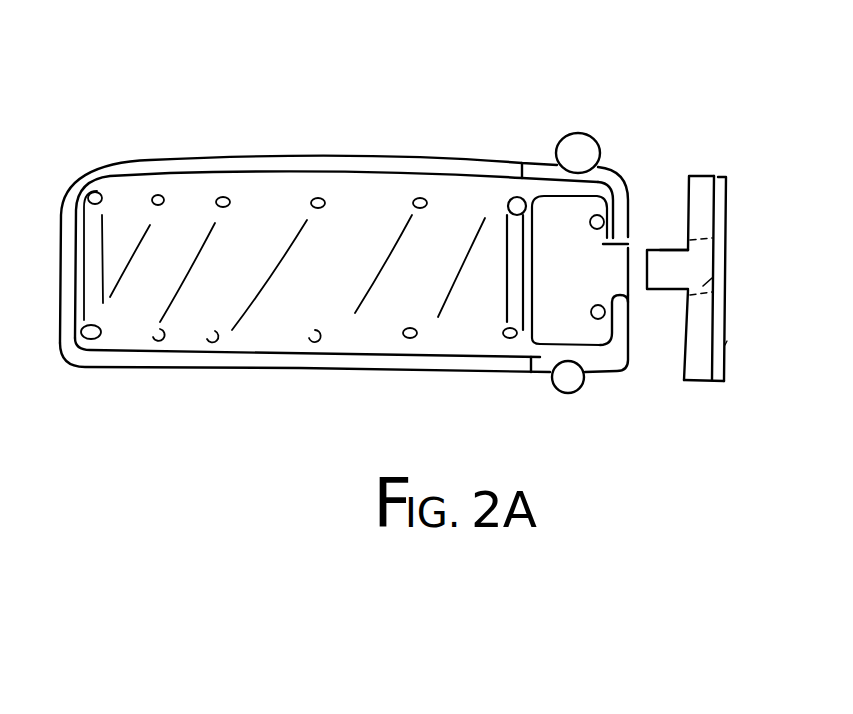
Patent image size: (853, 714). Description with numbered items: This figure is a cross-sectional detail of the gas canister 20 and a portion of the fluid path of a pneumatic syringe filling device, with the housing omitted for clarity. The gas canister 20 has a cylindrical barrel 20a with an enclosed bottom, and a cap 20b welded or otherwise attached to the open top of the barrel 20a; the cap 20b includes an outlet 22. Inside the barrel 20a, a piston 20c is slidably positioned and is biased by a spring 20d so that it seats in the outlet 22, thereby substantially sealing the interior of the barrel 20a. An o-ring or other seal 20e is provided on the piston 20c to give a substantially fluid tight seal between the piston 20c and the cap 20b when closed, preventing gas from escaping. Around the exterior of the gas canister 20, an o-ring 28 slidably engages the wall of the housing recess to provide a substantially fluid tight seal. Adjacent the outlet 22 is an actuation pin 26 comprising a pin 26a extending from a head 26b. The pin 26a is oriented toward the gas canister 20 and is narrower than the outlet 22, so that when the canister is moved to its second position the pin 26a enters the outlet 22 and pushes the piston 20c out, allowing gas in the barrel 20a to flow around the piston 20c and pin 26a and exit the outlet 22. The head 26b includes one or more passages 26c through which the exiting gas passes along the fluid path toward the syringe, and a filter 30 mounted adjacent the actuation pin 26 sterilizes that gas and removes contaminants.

The gas canister 20 is at (400, 122).
The cylindrical barrel 20a is at (276, 368).
The cap 20b is at (608, 375).
The piston 20c is at (547, 330).
The spring 20d is at (316, 197).
The seal 20e is at (592, 213).
The outlet 22 is at (638, 297).
The actuation pin 26 is at (705, 165).
The pin 26a is at (670, 249).
The head 26b is at (697, 383).
The passage 26c is at (727, 272).
The o-ring 28 is at (568, 395).
The filter 30 is at (729, 343).